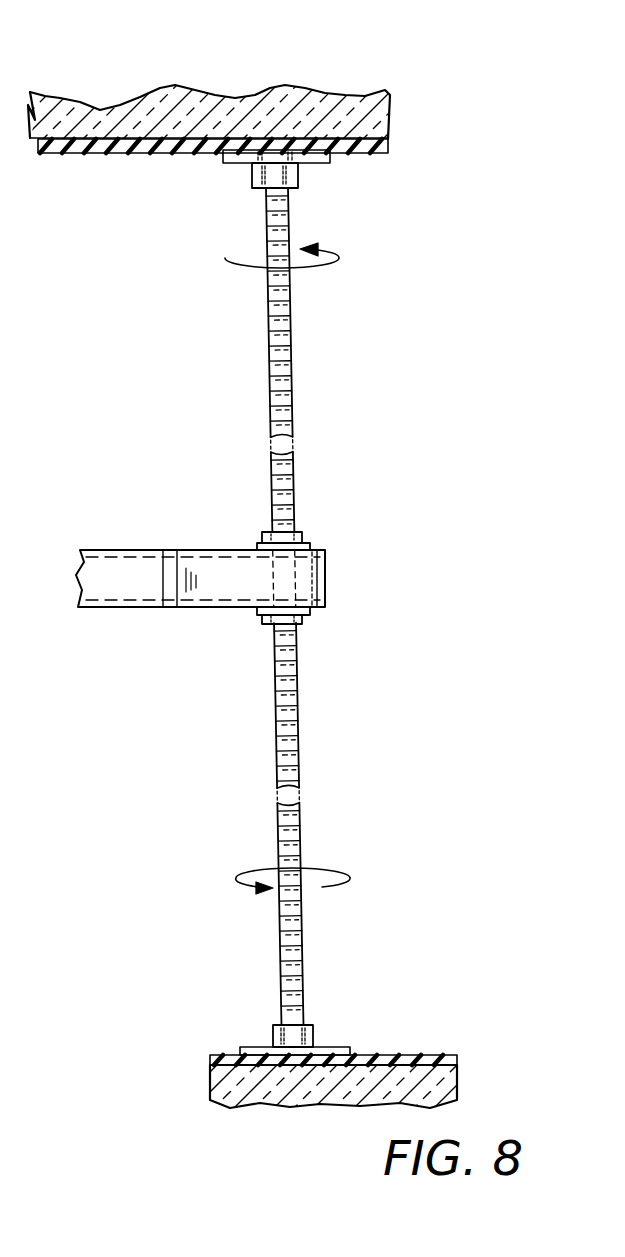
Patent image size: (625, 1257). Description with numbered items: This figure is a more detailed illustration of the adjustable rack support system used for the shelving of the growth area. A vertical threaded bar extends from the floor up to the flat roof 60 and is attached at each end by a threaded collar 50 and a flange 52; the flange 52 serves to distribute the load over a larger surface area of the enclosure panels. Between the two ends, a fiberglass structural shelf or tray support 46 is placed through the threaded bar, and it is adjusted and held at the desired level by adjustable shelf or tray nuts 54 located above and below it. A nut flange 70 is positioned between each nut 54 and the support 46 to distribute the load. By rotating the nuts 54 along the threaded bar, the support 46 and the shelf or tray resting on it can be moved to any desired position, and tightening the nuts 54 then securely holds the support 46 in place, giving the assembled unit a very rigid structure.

The flat roof 60 is at (109, 98).
The flange 52 is at (226, 165).
The threaded collar 50 is at (252, 190).
The shelf or tray support 46 is at (326, 575).
The adjustable shelf or tray nut 54 is at (303, 533).
The nut flange 70 is at (257, 545).